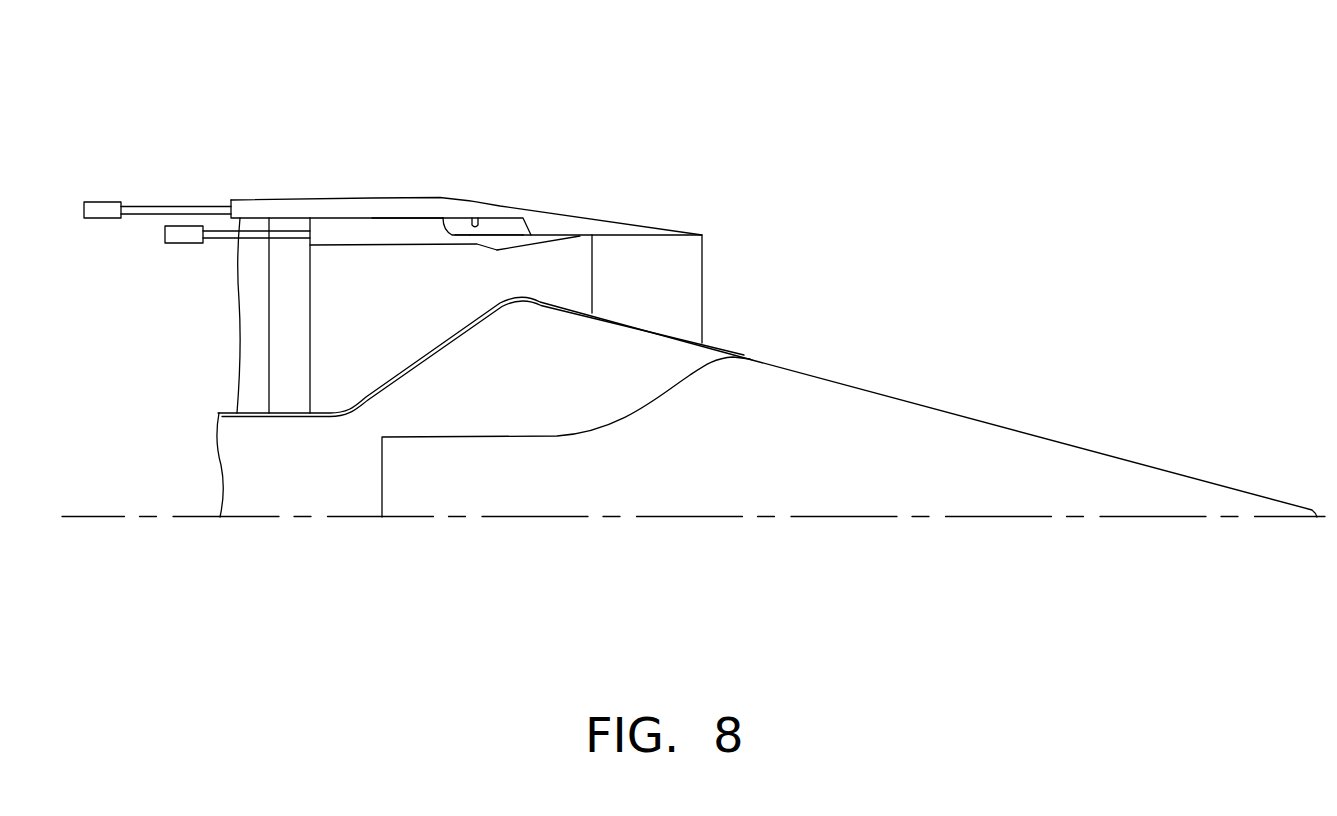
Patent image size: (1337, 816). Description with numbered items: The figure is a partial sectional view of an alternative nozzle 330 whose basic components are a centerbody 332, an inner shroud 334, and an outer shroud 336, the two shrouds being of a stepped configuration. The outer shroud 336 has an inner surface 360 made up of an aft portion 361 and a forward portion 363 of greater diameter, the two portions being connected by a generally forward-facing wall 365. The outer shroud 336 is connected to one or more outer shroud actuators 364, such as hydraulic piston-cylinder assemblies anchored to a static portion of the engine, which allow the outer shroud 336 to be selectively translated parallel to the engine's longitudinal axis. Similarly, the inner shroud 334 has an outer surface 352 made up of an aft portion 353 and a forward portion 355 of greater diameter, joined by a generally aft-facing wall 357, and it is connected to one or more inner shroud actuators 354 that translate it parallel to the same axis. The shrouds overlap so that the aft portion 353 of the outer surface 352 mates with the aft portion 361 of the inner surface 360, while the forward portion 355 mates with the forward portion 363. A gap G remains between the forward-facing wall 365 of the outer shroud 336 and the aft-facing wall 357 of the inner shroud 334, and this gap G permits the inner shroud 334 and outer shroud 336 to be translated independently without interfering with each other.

The nozzle 330 is at (656, 73).
The centerbody 332 is at (1025, 366).
The inner shroud 334 is at (333, 236).
The outer shroud 336 is at (292, 198).
The outer surface 352 is at (466, 232).
The aft portion 353 is at (498, 238).
The inner shroud actuators 354 is at (173, 243).
The forward portion 355 is at (417, 228).
The aft-facing wall 357 is at (453, 220).
The inner surface 360 is at (477, 219).
The aft portion 361 is at (625, 237).
The forward portion 363 is at (373, 218).
The outer shroud actuators 364 is at (101, 203).
The forward-facing wall 365 is at (528, 212).
The gap G is at (492, 226).